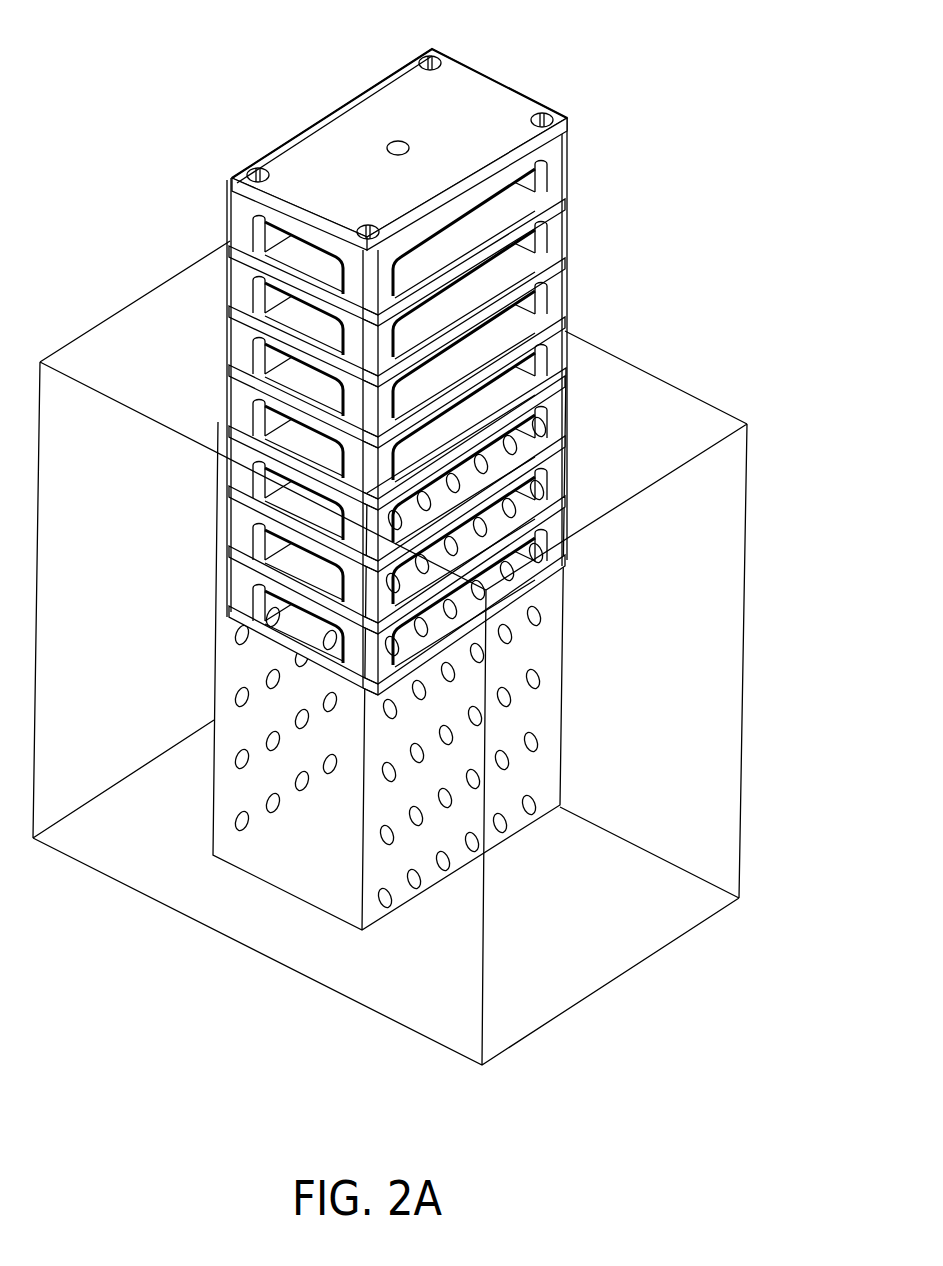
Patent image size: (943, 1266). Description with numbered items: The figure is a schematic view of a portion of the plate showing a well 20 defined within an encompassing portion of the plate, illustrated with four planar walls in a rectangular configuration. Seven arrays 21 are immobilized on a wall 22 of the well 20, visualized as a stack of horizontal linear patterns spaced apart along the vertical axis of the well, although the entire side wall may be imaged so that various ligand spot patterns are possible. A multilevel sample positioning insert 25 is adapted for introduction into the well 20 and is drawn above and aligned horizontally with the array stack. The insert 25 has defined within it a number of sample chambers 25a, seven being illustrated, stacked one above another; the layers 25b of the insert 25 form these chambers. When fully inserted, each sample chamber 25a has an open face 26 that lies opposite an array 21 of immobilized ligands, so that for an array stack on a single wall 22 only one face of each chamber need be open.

The well 20 is at (298, 828).
The arrays 21 is at (562, 722).
The wall 22 is at (524, 649).
The insert 25 is at (365, 349).
The sample chambers 25a is at (212, 197).
The tray plates 25b is at (212, 267).
The open face 26 is at (508, 205).